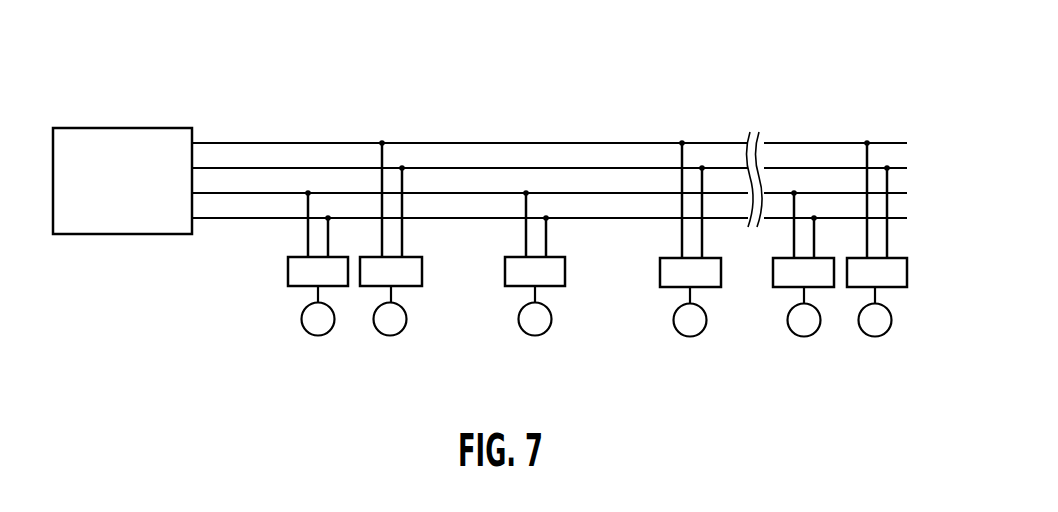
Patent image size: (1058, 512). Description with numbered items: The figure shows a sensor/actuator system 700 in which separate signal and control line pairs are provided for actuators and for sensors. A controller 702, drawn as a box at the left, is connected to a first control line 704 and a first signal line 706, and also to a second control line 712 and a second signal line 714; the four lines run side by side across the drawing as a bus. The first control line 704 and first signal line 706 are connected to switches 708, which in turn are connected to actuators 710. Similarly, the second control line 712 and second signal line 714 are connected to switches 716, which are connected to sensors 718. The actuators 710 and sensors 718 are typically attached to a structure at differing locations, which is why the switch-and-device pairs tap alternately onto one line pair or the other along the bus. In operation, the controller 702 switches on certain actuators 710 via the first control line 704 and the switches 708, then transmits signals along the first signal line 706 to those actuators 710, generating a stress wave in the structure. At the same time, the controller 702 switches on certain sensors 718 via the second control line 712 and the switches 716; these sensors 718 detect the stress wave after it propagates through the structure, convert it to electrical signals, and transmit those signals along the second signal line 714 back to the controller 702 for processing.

The sensor/actuator system 700 is at (656, 71).
The controller 702 is at (138, 192).
The first control line 704 is at (216, 219).
The first signal line 706 is at (257, 195).
The switches 708 is at (565, 274).
The actuators 710 is at (323, 334).
The second control line 712 is at (213, 167).
The second signal line 714 is at (258, 143).
The switches 716 is at (422, 274).
The sensors 718 is at (397, 334).